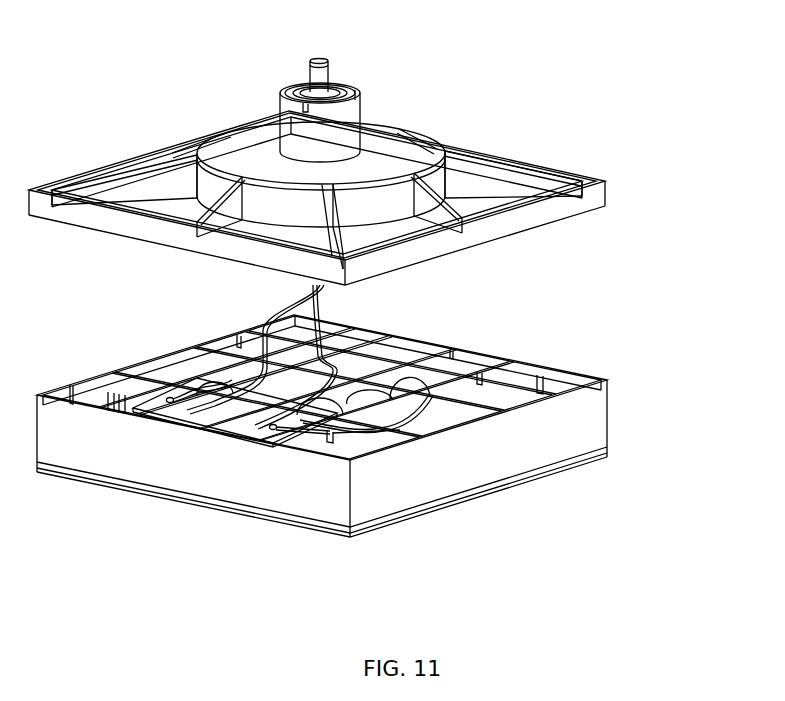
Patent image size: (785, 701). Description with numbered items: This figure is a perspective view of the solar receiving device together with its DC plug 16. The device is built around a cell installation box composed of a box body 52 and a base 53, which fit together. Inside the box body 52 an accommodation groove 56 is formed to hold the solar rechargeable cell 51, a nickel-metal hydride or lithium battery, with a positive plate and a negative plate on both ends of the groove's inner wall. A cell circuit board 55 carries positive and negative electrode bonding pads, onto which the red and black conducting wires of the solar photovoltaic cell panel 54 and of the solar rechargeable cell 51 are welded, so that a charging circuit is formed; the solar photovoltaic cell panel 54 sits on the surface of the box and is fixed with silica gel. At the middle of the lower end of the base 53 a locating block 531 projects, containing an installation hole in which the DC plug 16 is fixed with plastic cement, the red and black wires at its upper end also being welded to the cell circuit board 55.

The DC plug 16 is at (333, 77).
The locating block 531 is at (343, 127).
The base 53 is at (573, 203).
The solar rechargeable cell 51 is at (463, 356).
The box body 52 is at (570, 432).
The solar photovoltaic cell panel 54 is at (527, 473).
The cell circuit board 55 is at (213, 417).
The accommodation groove 56 is at (315, 417).